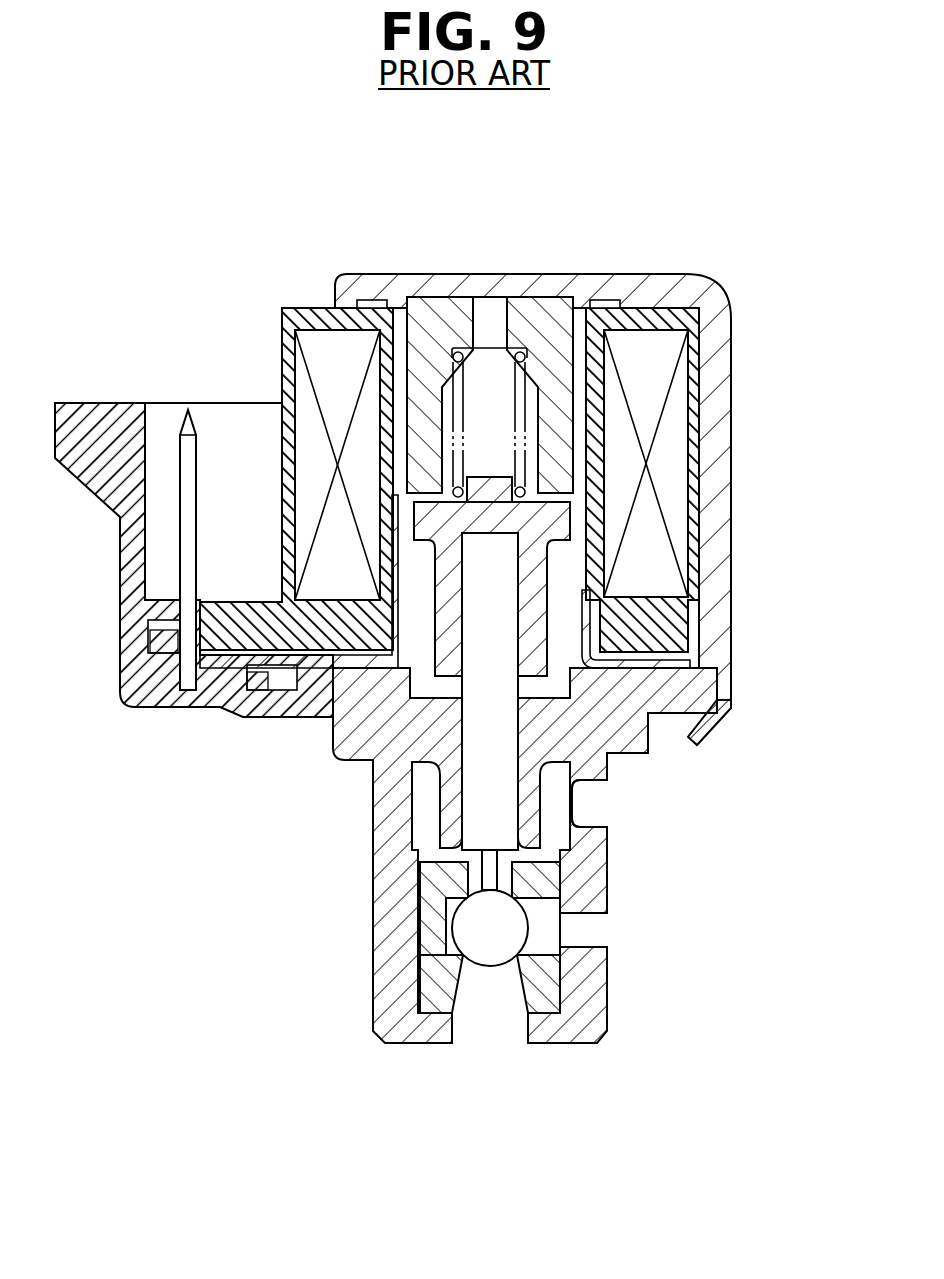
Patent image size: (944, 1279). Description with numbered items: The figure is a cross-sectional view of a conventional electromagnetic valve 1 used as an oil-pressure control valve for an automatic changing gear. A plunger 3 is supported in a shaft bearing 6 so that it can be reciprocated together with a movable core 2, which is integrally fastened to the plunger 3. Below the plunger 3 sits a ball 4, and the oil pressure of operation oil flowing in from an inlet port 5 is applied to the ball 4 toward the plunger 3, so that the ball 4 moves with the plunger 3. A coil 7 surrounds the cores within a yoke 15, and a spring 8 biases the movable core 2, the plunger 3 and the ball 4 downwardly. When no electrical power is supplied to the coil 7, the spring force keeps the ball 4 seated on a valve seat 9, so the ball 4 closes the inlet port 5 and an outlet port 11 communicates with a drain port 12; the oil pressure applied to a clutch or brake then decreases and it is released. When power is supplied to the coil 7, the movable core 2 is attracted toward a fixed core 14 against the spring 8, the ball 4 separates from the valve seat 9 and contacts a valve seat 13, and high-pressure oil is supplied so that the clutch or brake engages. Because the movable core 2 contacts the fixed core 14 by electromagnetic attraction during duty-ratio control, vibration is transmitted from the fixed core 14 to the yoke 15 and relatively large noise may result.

The electromagnetic valve 1 is at (672, 262).
The movable core 2 is at (537, 583).
The plunger 3 is at (480, 823).
The ball 4 is at (470, 925).
The inlet port 5 is at (505, 1027).
The shaft bearing 6 is at (425, 770).
The coil 7 is at (323, 366).
The spring 8 is at (441, 358).
The valve seat 9 is at (497, 958).
The outlet port 11 is at (603, 940).
The drain port 12 is at (588, 813).
The valve seat 13 is at (510, 900).
The fixed core 14 is at (542, 312).
The yoke 15 is at (722, 328).